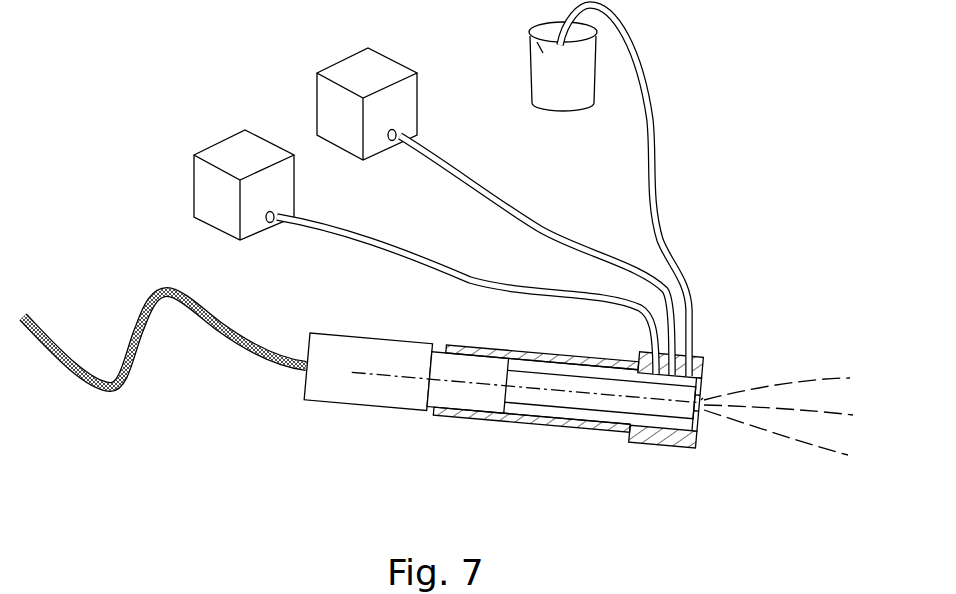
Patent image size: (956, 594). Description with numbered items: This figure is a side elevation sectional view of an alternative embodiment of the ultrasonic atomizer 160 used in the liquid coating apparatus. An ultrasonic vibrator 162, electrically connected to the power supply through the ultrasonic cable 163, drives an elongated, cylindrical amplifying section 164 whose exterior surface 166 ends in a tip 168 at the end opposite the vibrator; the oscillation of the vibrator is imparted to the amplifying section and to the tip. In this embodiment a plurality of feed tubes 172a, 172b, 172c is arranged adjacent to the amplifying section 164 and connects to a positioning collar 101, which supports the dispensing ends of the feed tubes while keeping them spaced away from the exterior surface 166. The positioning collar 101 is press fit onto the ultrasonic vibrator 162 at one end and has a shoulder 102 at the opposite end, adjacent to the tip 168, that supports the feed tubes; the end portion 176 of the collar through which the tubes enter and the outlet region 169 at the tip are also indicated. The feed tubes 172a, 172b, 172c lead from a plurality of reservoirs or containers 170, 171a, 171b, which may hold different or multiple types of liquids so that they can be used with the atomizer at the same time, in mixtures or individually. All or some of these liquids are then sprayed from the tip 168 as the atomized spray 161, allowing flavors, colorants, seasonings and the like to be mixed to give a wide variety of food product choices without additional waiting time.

The positioning collar 101 is at (524, 342).
The shoulder 102 is at (677, 449).
The outer tube housing 160 is at (420, 420).
The spray stream 161 is at (753, 433).
The handle connector block 162 is at (312, 402).
The ultrasonic cable 163 is at (108, 392).
The annular passage 164 is at (568, 402).
The inner tube 166 is at (608, 410).
The nozzle end plate 168 is at (707, 383).
The nozzle outlet 169 is at (703, 398).
The reservoir or container 170 is at (521, 61).
The reservoir or container 171a is at (191, 189).
The reservoir or container 171b is at (308, 62).
The feed tube 172a is at (657, 158).
The feed tube 172b is at (551, 228).
The feed tube 172c is at (433, 268).
The end cap upper hatched block 176 is at (705, 353).